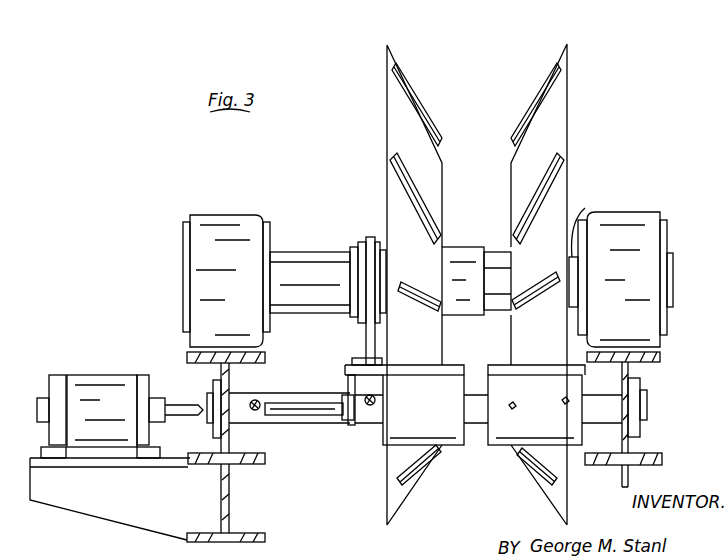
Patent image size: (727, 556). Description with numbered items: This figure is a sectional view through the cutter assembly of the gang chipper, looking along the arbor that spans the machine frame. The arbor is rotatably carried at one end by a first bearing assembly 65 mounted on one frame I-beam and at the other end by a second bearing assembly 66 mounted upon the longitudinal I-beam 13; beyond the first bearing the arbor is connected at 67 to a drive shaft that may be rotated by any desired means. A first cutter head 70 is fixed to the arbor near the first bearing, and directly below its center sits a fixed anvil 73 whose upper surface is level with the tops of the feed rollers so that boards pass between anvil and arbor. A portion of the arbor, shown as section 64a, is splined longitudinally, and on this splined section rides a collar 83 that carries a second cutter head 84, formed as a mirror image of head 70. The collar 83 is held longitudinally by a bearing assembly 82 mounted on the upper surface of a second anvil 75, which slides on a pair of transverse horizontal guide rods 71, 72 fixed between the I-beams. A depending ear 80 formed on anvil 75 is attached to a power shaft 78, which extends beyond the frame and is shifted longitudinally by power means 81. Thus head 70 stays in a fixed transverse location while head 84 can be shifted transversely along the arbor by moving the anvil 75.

The longitudinal I-beam 13 is at (229, 438).
The splined portion of arbor 64a is at (312, 252).
The first bearing assembly 65 is at (648, 242).
The second bearing assembly 66 is at (203, 242).
The connection to drive shaft 67 is at (590, 248).
The first cutter head 70 is at (557, 110).
The transverse horizontal guide rod 71 is at (320, 402).
The transverse horizontal guide rod 72 is at (243, 405).
The fixed anvil 73 is at (503, 372).
The second anvil 75 is at (452, 374).
The power shaft 78 is at (312, 411).
The depending ear 80 is at (349, 378).
The power means 81 is at (100, 378).
The bearing assembly 82 is at (369, 238).
The collar 83 is at (354, 248).
The second cutter head 84 is at (397, 133).